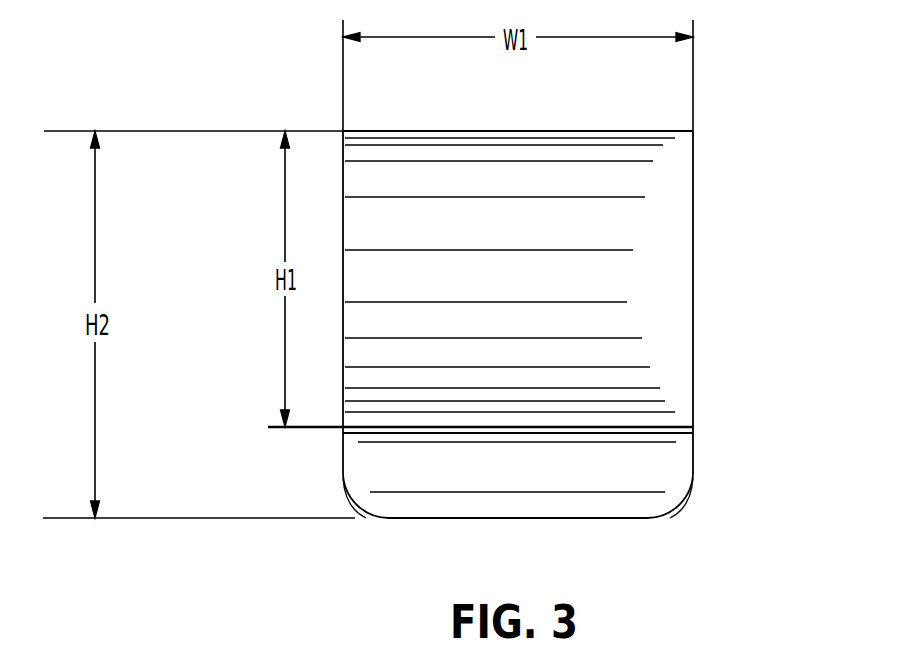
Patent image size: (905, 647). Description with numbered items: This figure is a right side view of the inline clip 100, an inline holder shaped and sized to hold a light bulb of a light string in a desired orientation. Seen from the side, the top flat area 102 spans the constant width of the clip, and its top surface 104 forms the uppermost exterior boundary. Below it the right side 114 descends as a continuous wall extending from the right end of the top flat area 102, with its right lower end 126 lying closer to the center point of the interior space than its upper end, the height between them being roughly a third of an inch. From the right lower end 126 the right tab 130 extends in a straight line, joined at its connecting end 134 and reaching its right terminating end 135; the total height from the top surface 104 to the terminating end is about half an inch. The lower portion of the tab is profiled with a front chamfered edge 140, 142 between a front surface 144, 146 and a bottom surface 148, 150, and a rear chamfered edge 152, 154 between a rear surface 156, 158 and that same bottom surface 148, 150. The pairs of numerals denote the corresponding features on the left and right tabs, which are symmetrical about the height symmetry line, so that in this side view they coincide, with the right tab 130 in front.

The inline clip 100 is at (199, 88).
The top flat area 102 is at (598, 118).
The top surface 104 is at (447, 130).
The right side 114 is at (612, 280).
The right lower end 126 is at (655, 427).
The right tab 130 is at (551, 478).
The connecting end 134 is at (640, 427).
The right terminating end 135 is at (557, 519).
The front chamfered edge 140 is at (299, 516).
The front chamfered edge 142 is at (329, 505).
The front surface 144 is at (290, 453).
The front surface 146 is at (343, 447).
The bottom surface 148 is at (454, 557).
The bottom surface 150 is at (462, 519).
The rear chamfered edge 152 is at (724, 502).
The rear chamfered edge 154 is at (708, 504).
The rear surface 156 is at (746, 442).
The rear surface 158 is at (695, 447).